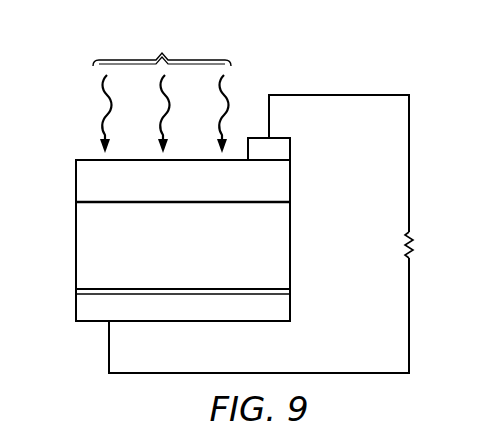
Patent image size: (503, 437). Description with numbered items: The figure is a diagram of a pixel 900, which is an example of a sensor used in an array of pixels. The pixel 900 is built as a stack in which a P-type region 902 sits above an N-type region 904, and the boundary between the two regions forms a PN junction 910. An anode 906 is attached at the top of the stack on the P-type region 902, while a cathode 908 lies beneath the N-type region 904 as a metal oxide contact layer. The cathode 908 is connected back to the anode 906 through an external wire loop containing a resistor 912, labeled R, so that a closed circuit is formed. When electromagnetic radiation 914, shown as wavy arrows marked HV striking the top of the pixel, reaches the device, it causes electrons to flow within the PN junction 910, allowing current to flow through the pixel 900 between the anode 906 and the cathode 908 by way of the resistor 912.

The pixel 900 is at (55, 80).
The P-type region 902 is at (290, 181).
The N-type region 904 is at (290, 247).
The anode 906 is at (290, 146).
The cathode 908 is at (290, 305).
The PN junction 910 is at (290, 203).
The resistor 912 is at (413, 248).
The electromagnetic radiation 914 is at (162, 77).